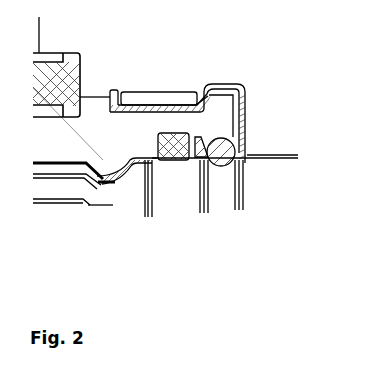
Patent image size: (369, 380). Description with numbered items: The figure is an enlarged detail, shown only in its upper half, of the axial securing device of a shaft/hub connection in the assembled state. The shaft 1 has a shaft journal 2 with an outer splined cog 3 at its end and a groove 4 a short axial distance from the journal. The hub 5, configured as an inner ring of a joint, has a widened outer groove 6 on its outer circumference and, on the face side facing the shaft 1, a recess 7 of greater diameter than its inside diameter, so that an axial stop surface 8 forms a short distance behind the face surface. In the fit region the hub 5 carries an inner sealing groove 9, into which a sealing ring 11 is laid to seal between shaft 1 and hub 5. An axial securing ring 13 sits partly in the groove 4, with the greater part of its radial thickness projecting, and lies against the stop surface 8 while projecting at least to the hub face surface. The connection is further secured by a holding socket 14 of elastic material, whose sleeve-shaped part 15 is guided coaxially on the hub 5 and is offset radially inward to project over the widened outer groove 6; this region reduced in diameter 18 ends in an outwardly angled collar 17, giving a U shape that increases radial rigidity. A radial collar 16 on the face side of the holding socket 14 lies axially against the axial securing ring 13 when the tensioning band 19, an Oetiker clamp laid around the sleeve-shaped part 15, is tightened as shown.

The shaft 1 is at (169, 205).
The shaft journal 2 is at (128, 195).
The outer splined cog 3 is at (57, 188).
The groove 4 is at (228, 180).
The hub 5 is at (92, 122).
The widened outer groove 6 is at (107, 162).
The recess 7 is at (224, 136).
The axial stop surface 8 is at (198, 152).
The inner sealing groove 9 is at (192, 131).
The sealing ring 11 is at (176, 147).
The axial securing ring 13 is at (218, 161).
The holding socket 14 is at (254, 81).
The sleeve-shaped part 15 is at (212, 74).
The radial collar 16 is at (247, 124).
The collar 17 is at (107, 162).
The region reduced in diameter 18 is at (172, 107).
The tensioning band 19 is at (144, 100).